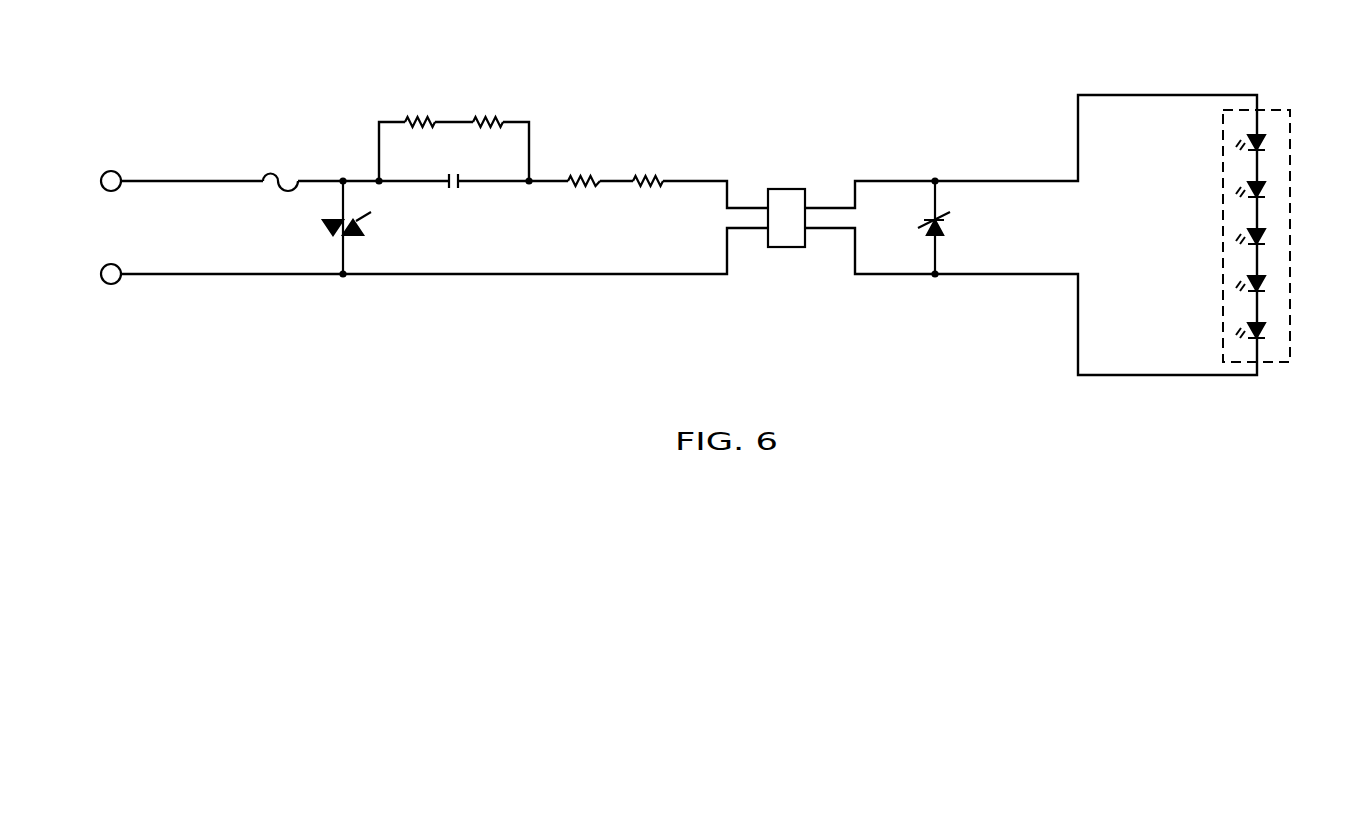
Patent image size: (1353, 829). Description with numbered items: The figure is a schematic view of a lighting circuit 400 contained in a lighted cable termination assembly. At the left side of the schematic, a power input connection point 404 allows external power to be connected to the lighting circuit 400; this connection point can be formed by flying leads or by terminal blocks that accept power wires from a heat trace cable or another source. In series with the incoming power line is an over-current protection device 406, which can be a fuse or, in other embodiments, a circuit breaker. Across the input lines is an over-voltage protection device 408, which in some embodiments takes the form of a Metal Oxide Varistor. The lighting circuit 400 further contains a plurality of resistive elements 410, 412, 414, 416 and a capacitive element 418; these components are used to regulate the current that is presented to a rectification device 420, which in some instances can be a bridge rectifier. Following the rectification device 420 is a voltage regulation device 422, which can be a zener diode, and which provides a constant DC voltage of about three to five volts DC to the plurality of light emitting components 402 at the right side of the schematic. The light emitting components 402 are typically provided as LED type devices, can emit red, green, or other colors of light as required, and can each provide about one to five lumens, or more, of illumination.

The lighting circuit 400 is at (309, 45).
The light emitting components 402 is at (1268, 363).
The power input connection point 404 is at (111, 191).
The over-current protection device 406 is at (272, 170).
The over-voltage protection device 408 is at (320, 239).
The resistive element 410 is at (418, 117).
The resistive element 412 is at (492, 117).
The resistive element 414 is at (575, 176).
The resistive element 416 is at (652, 176).
The capacitive element 418 is at (462, 183).
The rectification device 420 is at (788, 247).
The voltage regulation device 422 is at (950, 229).